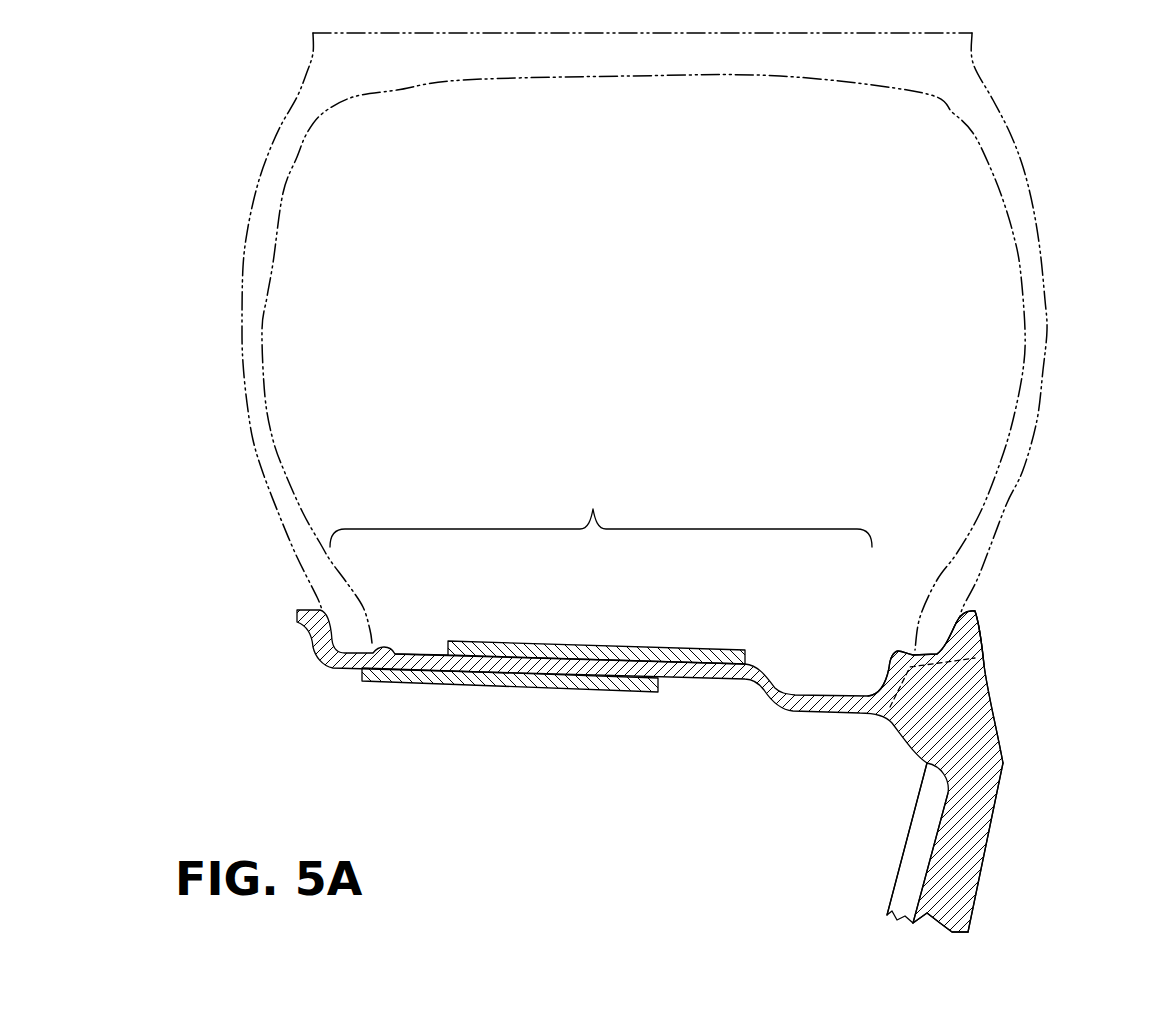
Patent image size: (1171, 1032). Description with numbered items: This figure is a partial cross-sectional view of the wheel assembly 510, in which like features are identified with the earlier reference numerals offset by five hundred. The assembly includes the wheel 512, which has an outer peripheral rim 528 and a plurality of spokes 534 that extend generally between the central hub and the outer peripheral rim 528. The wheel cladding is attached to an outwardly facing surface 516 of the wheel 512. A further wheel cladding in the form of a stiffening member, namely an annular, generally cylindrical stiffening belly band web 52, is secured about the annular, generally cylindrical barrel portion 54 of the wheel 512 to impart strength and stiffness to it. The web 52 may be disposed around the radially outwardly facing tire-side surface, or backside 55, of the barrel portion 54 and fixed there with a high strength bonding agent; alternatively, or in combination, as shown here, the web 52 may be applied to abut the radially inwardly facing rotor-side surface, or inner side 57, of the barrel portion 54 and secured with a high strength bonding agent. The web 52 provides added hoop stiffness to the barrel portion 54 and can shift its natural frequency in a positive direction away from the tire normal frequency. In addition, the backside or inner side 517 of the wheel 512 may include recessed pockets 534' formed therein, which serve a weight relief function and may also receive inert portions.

The wheel assembly 510 is at (1082, 553).
The wheel 512 is at (970, 722).
The outwardly facing surface 516 is at (1000, 790).
The backside or inner side 517 is at (917, 801).
The outer peripheral rim 528 is at (977, 613).
The spokes 534 is at (992, 862).
The recessed pockets 534' is at (843, 843).
The annular stiffening band or web 52 is at (578, 643).
The barrel portion 54 is at (601, 517).
The backside (outwardly facing surface of barrel portion) 55 is at (430, 653).
The inner side of barrel portion 57 is at (687, 682).